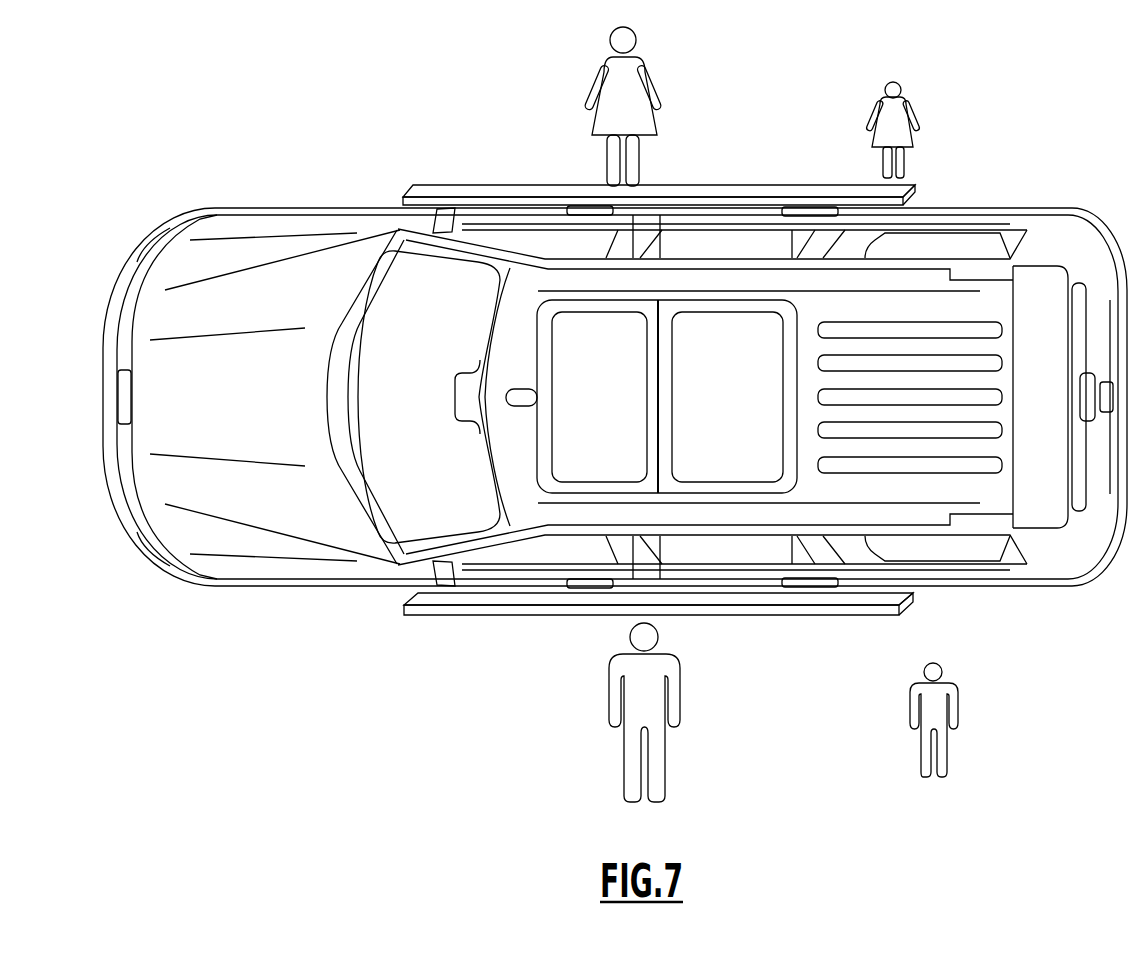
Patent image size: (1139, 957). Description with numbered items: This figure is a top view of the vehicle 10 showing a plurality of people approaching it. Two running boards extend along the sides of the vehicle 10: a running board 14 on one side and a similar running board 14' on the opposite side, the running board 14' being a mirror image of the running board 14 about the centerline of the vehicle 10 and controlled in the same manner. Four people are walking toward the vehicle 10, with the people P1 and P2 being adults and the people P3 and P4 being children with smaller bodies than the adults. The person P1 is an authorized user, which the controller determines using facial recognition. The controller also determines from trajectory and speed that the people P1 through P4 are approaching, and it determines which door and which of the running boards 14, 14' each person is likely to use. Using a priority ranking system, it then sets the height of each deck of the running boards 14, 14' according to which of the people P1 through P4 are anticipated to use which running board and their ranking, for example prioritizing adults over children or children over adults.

The vehicle 10 is at (237, 597).
The running board 14 is at (712, 615).
The running board 14' is at (714, 175).
The person P1 is at (683, 657).
The person P2 is at (657, 58).
The person P3 is at (960, 684).
The person P4 is at (920, 94).